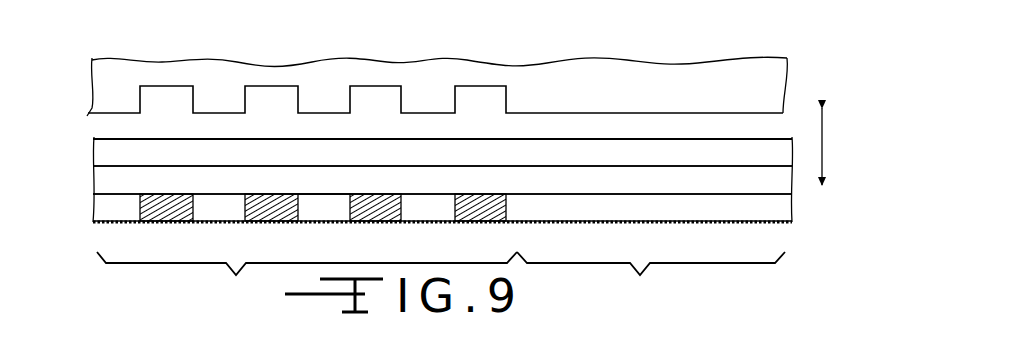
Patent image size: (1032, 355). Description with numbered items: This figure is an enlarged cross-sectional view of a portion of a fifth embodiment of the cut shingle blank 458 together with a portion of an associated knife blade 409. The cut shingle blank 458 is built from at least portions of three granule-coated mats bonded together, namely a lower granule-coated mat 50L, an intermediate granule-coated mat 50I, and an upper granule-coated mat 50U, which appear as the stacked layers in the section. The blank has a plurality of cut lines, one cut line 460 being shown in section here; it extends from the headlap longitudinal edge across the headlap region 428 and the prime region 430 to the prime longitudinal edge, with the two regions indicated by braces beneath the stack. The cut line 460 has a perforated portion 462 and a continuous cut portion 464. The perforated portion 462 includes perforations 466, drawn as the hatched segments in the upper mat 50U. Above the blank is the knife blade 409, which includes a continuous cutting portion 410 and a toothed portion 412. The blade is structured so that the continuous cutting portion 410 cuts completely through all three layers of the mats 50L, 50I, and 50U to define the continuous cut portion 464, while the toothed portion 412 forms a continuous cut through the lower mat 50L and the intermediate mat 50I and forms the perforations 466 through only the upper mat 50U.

The toothed portion 412 is at (90, 79).
The knife blade 409 is at (651, 57).
The continuous cutting portion 410 is at (766, 99).
The cut shingle blank 458 is at (87, 134).
The cut line 460 is at (88, 182).
The continuous cut portion 464 is at (680, 137).
The perforated portion 462 is at (321, 192).
The perforations 466 is at (221, 212).
The lower granule-coated mat 50L is at (792, 154).
The intermediate granule-coated mat 50I is at (792, 181).
The upper granule-coated mat 50U is at (792, 206).
The headlap region 428 is at (307, 280).
The prime region 430 is at (651, 277).